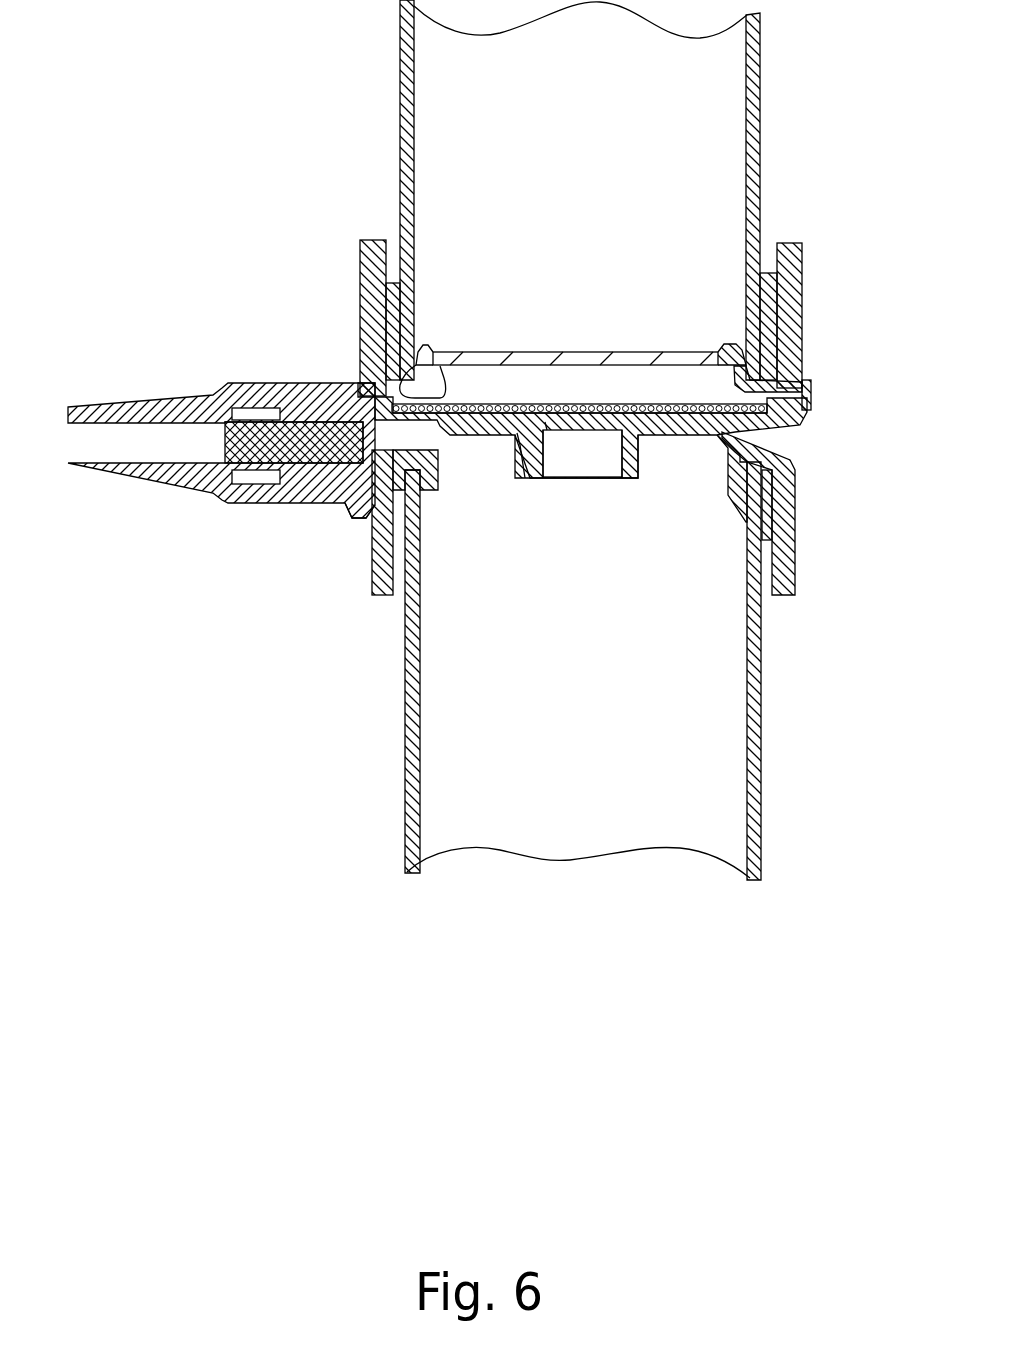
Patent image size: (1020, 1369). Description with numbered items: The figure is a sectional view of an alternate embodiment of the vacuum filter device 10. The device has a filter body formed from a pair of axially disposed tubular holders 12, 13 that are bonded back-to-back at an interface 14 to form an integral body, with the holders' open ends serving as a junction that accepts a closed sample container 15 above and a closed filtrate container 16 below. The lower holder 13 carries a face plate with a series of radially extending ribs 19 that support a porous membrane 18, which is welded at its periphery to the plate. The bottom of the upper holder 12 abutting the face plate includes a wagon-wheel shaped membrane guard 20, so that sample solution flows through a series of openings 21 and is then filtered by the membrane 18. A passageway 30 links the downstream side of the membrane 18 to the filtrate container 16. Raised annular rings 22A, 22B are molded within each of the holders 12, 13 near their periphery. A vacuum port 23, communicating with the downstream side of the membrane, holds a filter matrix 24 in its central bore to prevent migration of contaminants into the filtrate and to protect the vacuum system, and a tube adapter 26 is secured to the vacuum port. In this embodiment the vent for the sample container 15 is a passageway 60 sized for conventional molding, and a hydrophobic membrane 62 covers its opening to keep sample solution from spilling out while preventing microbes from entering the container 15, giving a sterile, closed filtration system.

The vacuum filter device 10 is at (242, 132).
The tubular holder 12 is at (800, 278).
The tubular holder 13 is at (797, 583).
The interface 14 is at (360, 380).
The sample container 15 is at (764, 78).
The filtrate container 16 is at (760, 843).
The porous membrane 18 is at (403, 320).
The radially extending ribs 19 is at (546, 422).
The membrane guard 20 is at (457, 352).
The openings 21 is at (628, 350).
The raised annular ring 22A is at (778, 340).
The raised annular ring 22B is at (762, 532).
The vacuum port 23 is at (300, 473).
The filter matrix 24 is at (178, 488).
The tube adapter 26 is at (346, 510).
The passageway 30 is at (594, 479).
The passageway 60 is at (802, 380).
The hydrophobic membrane 62 is at (812, 396).